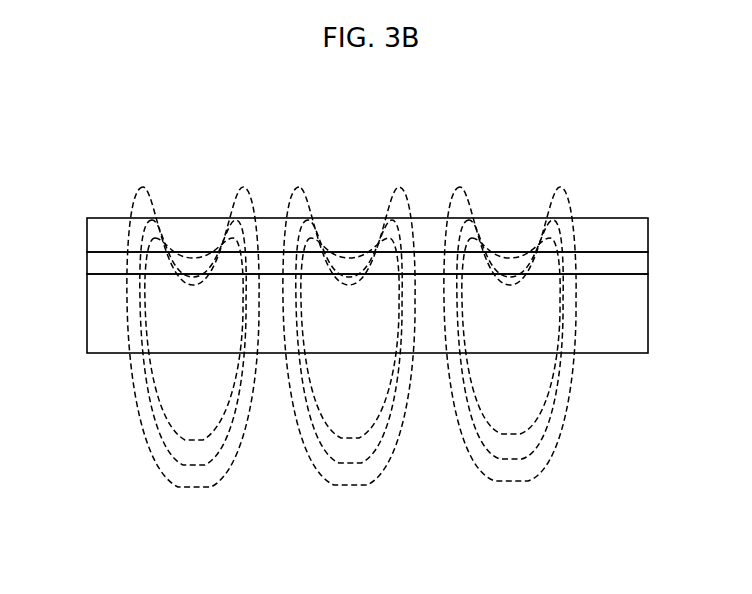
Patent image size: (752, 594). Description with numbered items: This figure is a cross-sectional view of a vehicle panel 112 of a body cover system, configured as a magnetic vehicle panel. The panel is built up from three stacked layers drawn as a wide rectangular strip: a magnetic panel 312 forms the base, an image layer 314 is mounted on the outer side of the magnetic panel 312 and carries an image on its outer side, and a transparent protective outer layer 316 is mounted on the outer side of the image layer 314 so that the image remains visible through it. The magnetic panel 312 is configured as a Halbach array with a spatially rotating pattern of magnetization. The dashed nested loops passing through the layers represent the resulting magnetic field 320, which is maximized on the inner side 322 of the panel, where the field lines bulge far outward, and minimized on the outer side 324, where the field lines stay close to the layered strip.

The vehicle panel 112 is at (314, 337).
The magnetic panel 312 is at (630, 360).
The image layer 314 is at (648, 263).
The protective outer layer 316 is at (608, 212).
The magnetic field 320 is at (328, 340).
The inner side 322 is at (193, 500).
The outer side 324 is at (247, 177).